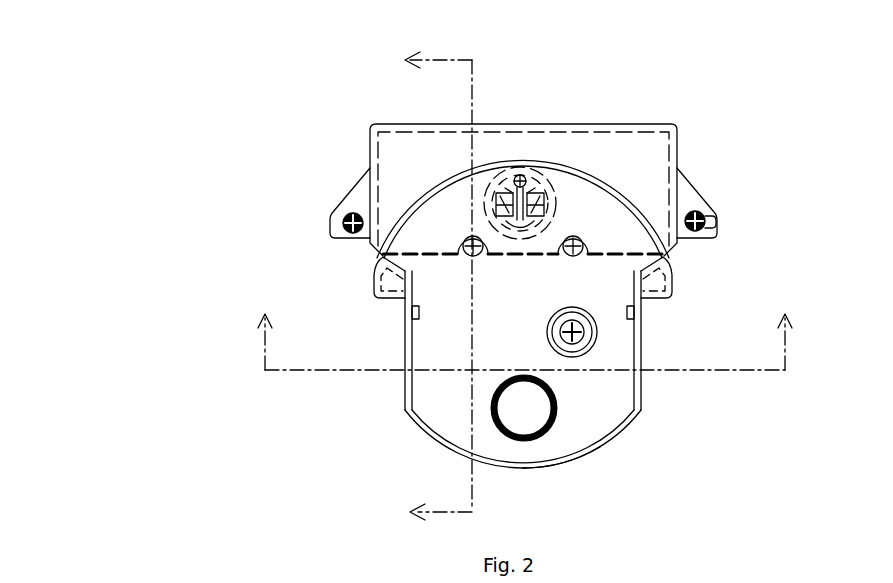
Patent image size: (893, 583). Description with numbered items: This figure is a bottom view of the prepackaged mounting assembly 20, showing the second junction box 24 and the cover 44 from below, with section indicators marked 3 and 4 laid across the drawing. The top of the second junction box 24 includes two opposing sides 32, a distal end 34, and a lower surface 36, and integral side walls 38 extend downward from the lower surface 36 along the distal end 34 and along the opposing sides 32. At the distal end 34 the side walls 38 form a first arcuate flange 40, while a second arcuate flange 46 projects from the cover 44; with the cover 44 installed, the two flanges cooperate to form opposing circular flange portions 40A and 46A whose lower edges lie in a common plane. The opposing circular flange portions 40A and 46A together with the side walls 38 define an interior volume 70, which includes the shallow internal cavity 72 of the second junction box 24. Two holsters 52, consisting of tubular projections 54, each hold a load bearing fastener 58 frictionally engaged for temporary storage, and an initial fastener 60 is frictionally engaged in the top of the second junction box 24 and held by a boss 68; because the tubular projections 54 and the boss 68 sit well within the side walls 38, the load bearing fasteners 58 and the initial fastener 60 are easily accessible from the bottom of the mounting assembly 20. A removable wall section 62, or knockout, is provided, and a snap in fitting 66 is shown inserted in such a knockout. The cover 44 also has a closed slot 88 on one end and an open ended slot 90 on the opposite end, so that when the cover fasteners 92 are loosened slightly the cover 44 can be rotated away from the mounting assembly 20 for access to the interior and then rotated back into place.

The prepackaged mounting assembly 20 is at (205, 251).
The second junction box 24 is at (452, 231).
The opposing sides 32 is at (395, 396).
The distal end 34 is at (525, 471).
The lower surface 36 is at (445, 343).
The side walls 38 is at (572, 466).
The first arcuate flange 40 is at (430, 445).
The circular flange portion 40A is at (605, 445).
The cover 44 is at (429, 173).
The second arcuate flange 46 is at (571, 170).
The circular flange portion 46A is at (680, 278).
The holster 52 is at (579, 258).
The tubular projection 54 is at (580, 232).
The load bearing fastener 58 is at (468, 258).
The initial fastener 60 is at (566, 313).
The removable wall section 62 is at (537, 417).
The fitting 66 is at (518, 177).
The boss 68 is at (552, 330).
The interior volume 70 is at (612, 338).
The shallow internal cavity 72 is at (457, 403).
The closed slot 88 is at (718, 222).
The open ended slot 90 is at (352, 240).
The cover fastener 92 is at (350, 222).
The section line 3- 3 is at (525, 326).
The section line 4- 4 is at (429, 290).